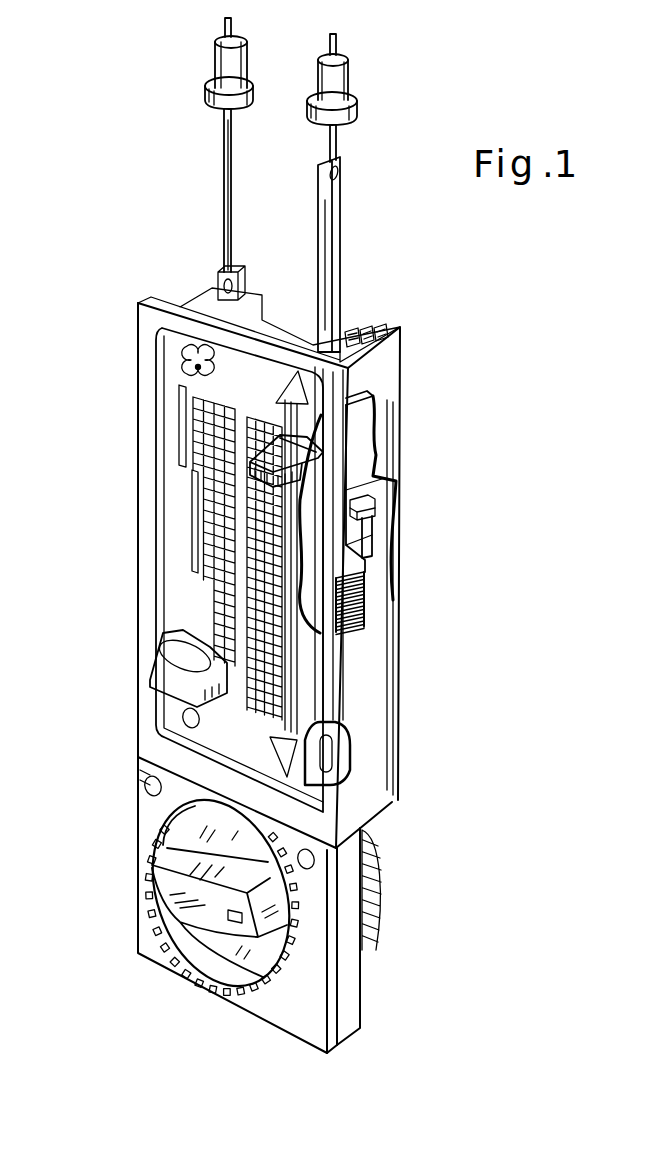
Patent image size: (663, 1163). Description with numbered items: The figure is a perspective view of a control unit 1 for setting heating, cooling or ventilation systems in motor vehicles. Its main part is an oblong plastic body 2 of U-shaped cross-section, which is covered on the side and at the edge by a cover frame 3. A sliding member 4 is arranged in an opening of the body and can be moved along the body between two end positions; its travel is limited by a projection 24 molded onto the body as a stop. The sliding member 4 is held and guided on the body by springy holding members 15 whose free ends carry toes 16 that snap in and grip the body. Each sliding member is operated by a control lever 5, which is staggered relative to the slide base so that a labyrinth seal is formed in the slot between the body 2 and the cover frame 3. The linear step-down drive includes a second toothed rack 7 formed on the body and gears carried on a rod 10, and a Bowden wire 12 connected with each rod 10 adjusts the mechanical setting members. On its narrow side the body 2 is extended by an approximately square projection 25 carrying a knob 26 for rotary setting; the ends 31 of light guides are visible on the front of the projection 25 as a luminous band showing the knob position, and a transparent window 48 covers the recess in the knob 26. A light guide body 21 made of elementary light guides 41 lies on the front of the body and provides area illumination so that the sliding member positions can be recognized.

The housing 1 is at (135, 605).
The body 2 is at (247, 297).
The cover frame 3 is at (148, 465).
The sliding member 4 is at (360, 423).
The control lever 5 is at (265, 463).
The second toothed rack 7 is at (363, 330).
The rod 10 is at (340, 222).
The Bowden wire 12 is at (227, 133).
The holding member 15 is at (367, 523).
The toe 16 is at (358, 505).
The light guide body 21 is at (222, 540).
The projection 24 is at (323, 765).
The projection 25 is at (292, 1012).
The knob 26 is at (180, 905).
The ends of light guides 31 is at (182, 958).
The elementary light guide 41 is at (267, 633).
The window 48 is at (233, 918).